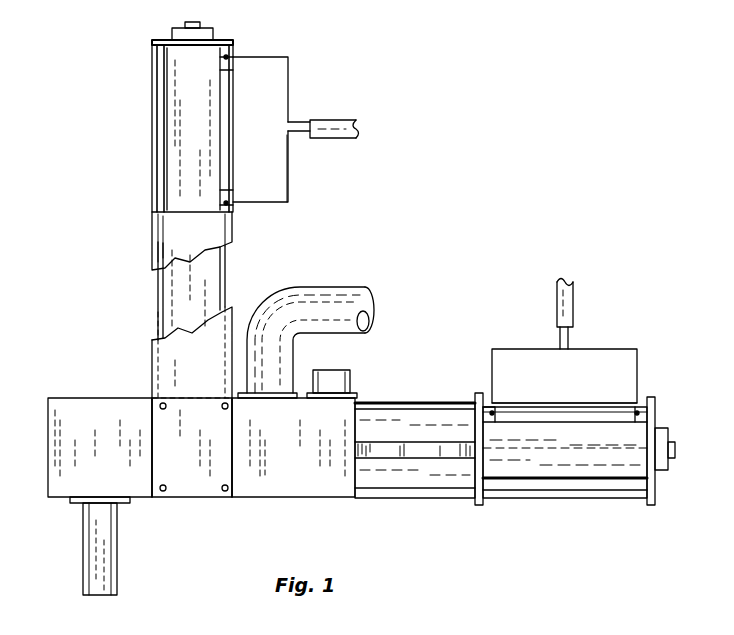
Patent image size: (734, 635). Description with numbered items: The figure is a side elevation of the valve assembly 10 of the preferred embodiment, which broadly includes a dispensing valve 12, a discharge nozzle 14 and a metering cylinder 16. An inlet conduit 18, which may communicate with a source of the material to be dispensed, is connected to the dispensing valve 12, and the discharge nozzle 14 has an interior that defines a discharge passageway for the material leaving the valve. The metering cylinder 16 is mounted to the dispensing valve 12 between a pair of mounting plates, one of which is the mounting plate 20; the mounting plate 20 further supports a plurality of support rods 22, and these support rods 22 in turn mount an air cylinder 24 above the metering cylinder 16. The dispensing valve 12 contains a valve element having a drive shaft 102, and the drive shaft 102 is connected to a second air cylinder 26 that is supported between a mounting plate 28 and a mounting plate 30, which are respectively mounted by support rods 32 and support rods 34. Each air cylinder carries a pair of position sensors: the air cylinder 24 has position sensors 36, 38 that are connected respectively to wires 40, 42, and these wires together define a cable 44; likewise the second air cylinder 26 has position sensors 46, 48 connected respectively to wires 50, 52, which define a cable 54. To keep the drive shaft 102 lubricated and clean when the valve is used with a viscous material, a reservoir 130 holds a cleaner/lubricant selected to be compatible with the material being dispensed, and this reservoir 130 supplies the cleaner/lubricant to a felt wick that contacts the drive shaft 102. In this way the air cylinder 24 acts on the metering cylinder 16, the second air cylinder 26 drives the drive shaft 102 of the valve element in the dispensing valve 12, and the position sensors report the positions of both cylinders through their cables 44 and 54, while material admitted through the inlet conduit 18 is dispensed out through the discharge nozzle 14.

The valve assembly 10 is at (437, 212).
The dispensing valve 12 is at (197, 518).
The discharge nozzle 14 is at (98, 568).
The metering cylinder 16 is at (172, 305).
The inlet conduit 18 is at (340, 310).
The mounting plate 20 is at (165, 245).
The support rods 22 is at (232, 143).
The air cylinder 24 is at (183, 82).
The second air cylinder 26 is at (508, 462).
The mounting plate 28 is at (482, 505).
The mounting plate 30 is at (650, 480).
The support rods 32 is at (395, 410).
The support rods 34 is at (600, 460).
The position sensor 36 is at (226, 57).
The position sensor 38 is at (226, 203).
The wire 40 is at (290, 75).
The wire 42 is at (290, 178).
The cable 44 is at (340, 125).
The position sensor 46 is at (485, 412).
The position sensor 48 is at (637, 412).
The wire 50 is at (492, 349).
The wire 52 is at (625, 349).
The cable 54 is at (557, 305).
The drive shaft 102 is at (400, 452).
The reservoir 130 is at (330, 372).